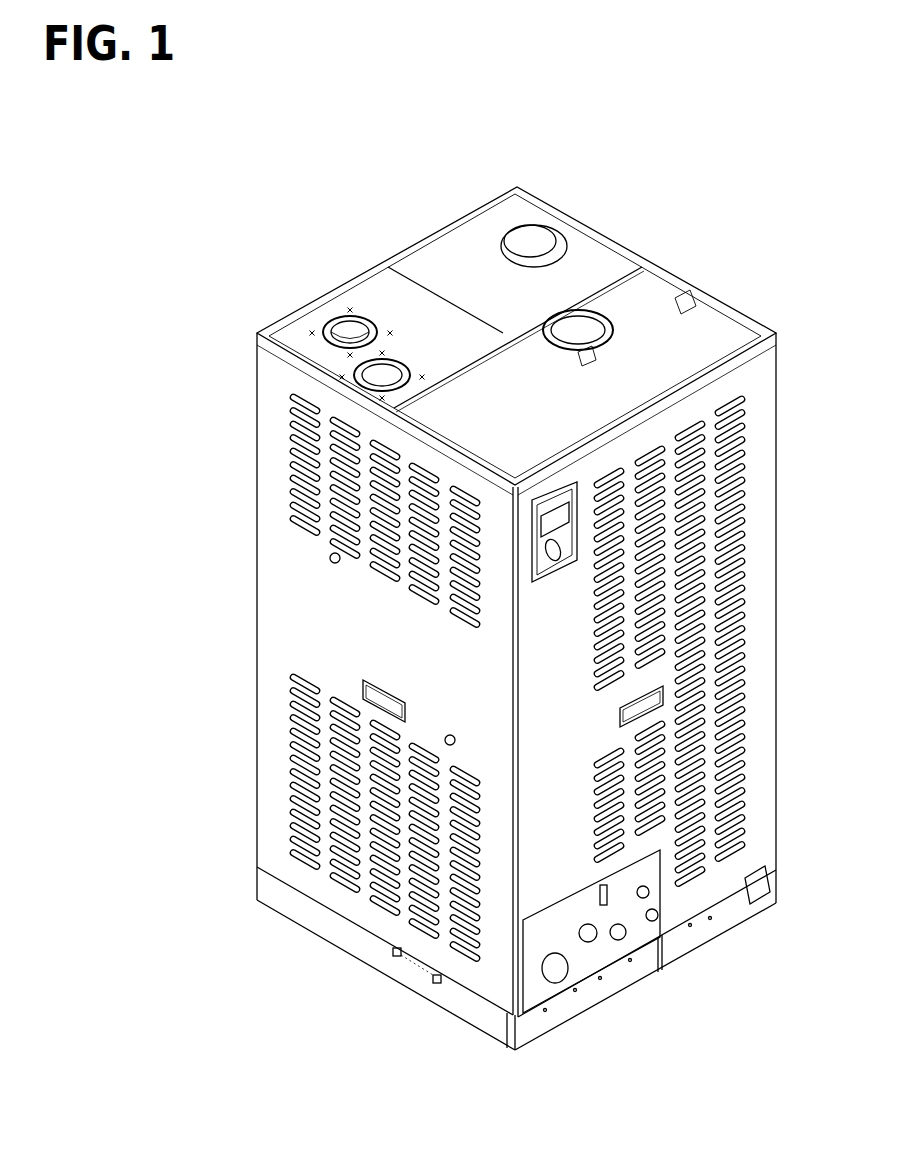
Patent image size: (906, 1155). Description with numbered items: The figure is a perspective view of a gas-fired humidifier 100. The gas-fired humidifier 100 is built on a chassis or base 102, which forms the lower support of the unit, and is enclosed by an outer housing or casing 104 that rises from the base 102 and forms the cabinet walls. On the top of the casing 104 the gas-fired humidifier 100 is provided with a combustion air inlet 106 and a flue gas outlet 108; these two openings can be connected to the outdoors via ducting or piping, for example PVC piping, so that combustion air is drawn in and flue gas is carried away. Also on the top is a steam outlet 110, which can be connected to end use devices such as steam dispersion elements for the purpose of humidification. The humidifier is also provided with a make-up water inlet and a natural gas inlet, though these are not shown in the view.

The gas-fired humidifier 100 is at (200, 227).
The base 102 is at (275, 890).
The outer housing 104 is at (275, 645).
The combustion air inlet 106 is at (357, 377).
The flue gas outlet 108 is at (340, 320).
The steam outlet 110 is at (518, 242).